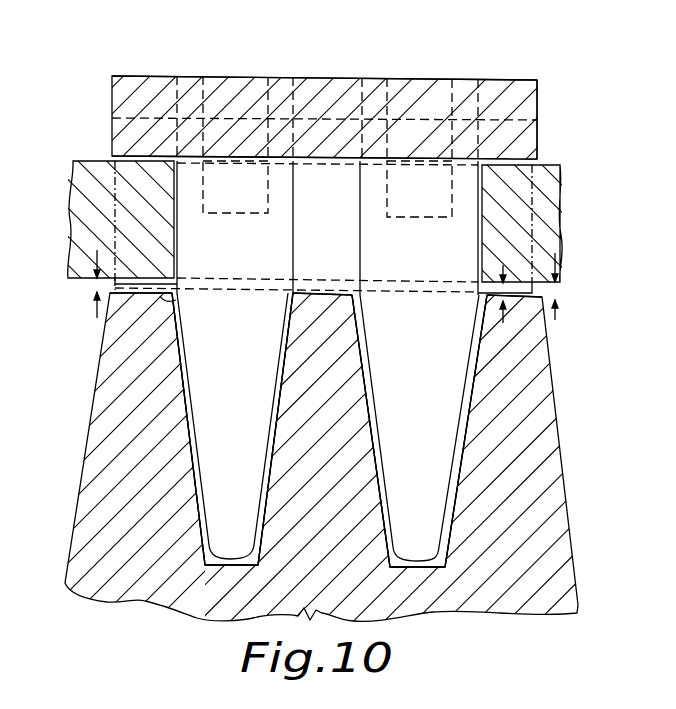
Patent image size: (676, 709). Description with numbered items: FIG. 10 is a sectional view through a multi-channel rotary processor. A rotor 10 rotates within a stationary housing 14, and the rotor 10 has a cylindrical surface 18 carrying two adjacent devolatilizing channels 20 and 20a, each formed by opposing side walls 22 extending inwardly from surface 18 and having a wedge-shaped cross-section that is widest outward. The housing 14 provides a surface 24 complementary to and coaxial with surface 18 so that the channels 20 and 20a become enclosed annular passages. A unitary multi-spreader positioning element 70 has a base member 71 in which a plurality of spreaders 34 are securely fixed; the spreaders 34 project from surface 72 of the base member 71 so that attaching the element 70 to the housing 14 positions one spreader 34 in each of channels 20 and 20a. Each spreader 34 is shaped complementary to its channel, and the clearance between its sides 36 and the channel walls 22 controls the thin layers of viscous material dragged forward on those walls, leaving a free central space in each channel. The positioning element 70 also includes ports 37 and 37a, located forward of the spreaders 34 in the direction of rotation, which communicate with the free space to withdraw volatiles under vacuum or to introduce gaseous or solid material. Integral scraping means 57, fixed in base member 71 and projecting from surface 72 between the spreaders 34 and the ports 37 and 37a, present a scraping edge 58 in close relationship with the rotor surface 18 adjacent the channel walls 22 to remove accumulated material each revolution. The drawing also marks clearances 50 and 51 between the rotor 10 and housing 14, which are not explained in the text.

The rotor 10 is at (102, 398).
The housing 14 is at (81, 173).
The surface 18 is at (133, 298).
The processing channel 20 is at (258, 537).
The devolatilizing channel 20a is at (446, 537).
The side walls 22 is at (285, 385).
The surface 24 is at (560, 283).
The spreader 34 is at (329, 430).
The sides 36 is at (270, 455).
The port 37 is at (270, 97).
The port 37a is at (461, 92).
The gap 50 is at (96, 292).
The gap 51 is at (516, 307).
The scraping means 57 is at (110, 127).
The scraping edge 58 is at (176, 296).
The multi-spreader positioning element 70 is at (537, 82).
The base member 71 is at (540, 128).
The surface 72 is at (538, 163).